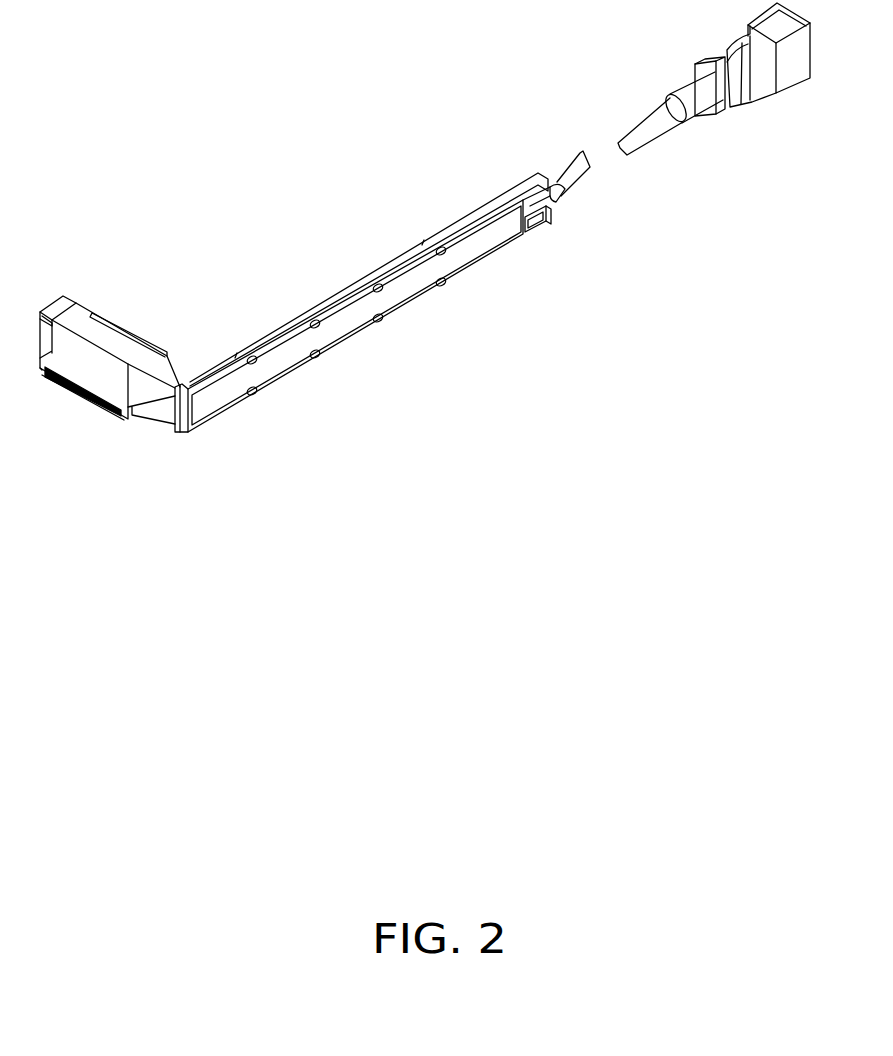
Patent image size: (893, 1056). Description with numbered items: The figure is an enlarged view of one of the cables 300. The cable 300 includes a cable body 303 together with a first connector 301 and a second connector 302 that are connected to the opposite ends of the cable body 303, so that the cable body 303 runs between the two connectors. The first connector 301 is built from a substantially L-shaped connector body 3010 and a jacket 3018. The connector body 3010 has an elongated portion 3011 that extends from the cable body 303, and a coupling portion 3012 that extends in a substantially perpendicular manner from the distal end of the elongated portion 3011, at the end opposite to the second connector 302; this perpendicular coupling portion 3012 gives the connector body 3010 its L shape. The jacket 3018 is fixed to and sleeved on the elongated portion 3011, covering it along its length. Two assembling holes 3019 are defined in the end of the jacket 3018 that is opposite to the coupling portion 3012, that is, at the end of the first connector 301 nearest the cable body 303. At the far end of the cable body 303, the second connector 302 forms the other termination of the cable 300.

The cable 300 is at (334, 93).
The first connector 301 is at (446, 455).
The second connector 302 is at (788, 68).
The cable body 303 is at (640, 138).
The connector body 3010 is at (328, 449).
The elongated portion 3011 is at (252, 376).
The coupling portion 3012 is at (160, 365).
The jacket 3018 is at (340, 310).
The assembling holes 3019 is at (549, 224).